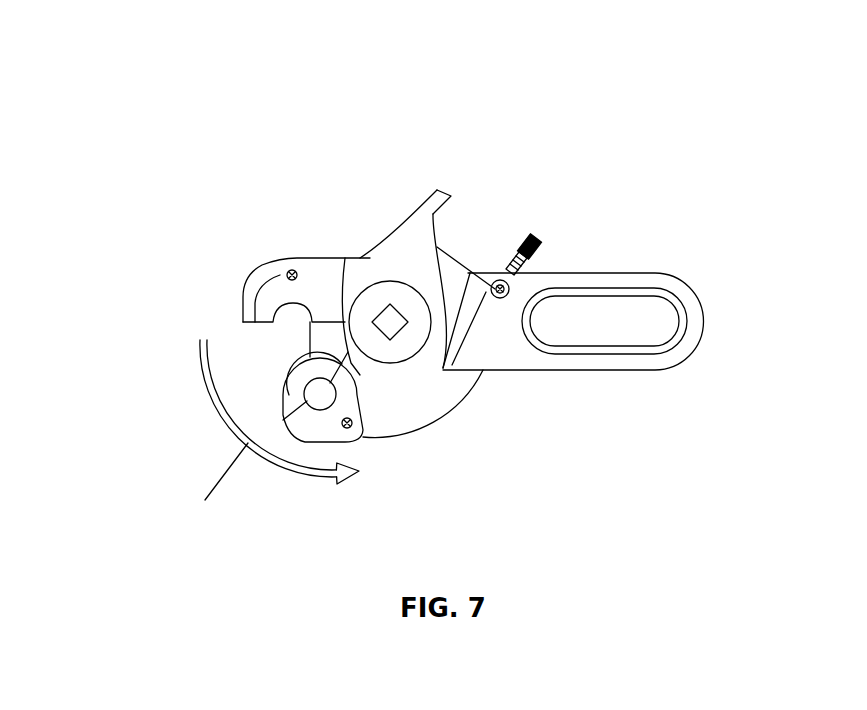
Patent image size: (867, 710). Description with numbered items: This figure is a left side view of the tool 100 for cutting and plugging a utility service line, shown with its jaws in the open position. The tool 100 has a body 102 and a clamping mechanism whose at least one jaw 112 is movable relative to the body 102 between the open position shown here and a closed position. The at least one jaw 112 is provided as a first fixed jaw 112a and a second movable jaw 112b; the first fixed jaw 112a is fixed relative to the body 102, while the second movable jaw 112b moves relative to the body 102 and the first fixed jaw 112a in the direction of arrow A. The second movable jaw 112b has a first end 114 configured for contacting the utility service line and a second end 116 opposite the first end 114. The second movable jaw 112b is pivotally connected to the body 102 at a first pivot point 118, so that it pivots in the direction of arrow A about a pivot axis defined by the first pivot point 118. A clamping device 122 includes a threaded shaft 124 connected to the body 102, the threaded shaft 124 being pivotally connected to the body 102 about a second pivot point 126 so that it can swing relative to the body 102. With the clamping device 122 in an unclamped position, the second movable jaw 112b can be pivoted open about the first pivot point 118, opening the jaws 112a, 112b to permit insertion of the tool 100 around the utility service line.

The tool 100 is at (662, 134).
The body 102 is at (487, 337).
The jaw 112 is at (220, 213).
The first fixed jaw 112a is at (333, 297).
The second movable jaw 112b is at (367, 393).
The first end 114 is at (308, 442).
The second end 116 is at (408, 212).
The first pivot point 118 is at (390, 320).
The clamping device 122 is at (569, 240).
The threaded shaft 124 is at (534, 237).
The second pivot point 126 is at (509, 294).